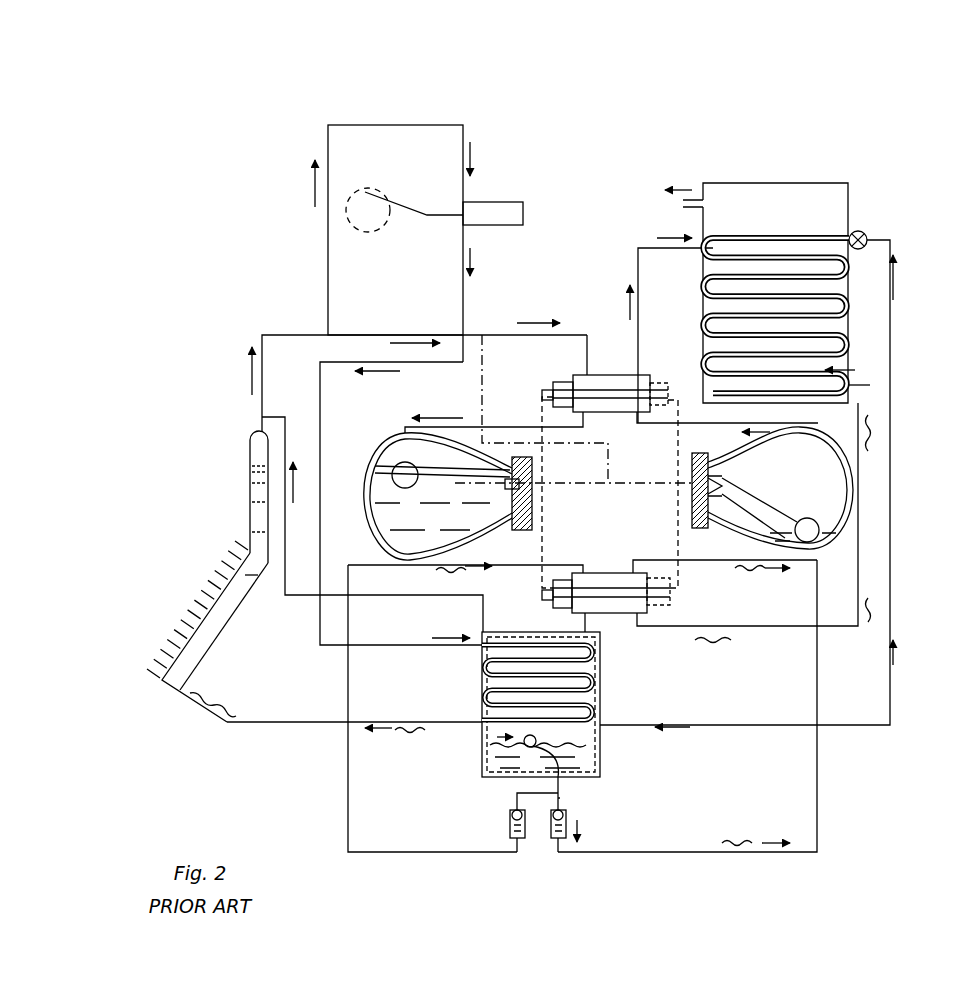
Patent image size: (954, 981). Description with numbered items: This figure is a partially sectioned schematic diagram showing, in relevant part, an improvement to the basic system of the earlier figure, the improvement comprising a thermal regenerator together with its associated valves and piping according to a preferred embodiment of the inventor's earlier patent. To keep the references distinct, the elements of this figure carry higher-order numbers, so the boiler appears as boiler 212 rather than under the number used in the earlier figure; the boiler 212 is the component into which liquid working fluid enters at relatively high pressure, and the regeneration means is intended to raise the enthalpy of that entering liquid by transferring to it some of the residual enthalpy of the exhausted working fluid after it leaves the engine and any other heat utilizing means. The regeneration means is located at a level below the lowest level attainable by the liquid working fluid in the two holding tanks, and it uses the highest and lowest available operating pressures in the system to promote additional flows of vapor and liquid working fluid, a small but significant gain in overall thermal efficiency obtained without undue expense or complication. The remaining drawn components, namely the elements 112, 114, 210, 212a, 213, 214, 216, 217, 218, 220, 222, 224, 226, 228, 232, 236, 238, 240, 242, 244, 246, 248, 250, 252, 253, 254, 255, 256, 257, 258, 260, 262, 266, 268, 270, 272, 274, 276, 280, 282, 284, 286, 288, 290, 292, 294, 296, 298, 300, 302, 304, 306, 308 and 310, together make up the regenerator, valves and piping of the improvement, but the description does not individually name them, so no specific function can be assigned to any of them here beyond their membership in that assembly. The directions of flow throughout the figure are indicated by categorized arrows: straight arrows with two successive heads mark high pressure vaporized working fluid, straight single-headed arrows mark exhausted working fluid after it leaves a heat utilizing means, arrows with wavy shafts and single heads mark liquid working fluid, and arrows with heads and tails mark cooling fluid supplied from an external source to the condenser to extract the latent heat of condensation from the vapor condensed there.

The first unit boundary 112 is at (483, 385).
The shaft 114 is at (622, 484).
The thermal system 210 is at (606, 177).
The boiler 212 is at (219, 630).
The riser section of evaporator tube 212a is at (250, 477).
The fins 213 is at (200, 592).
The nozzle 214 is at (512, 210).
The supply conduit 216 is at (280, 334).
The conduit 217 is at (284, 596).
The housing 218 is at (465, 130).
The deflector 220 is at (411, 210).
The turbine wheel 222 is at (385, 226).
The conduit 224 is at (465, 300).
The heat exchange coil 226 is at (492, 681).
The liquid 228 is at (490, 743).
The reservoir 232 is at (601, 703).
The conduit 236 is at (892, 239).
The valve 238 is at (862, 232).
The condenser 240 is at (782, 182).
The condenser coil 242 is at (713, 292).
The conduit 244 is at (862, 403).
The conduit 246 is at (728, 562).
The outlet 248 is at (536, 742).
The conduit 250 is at (560, 785).
The branch conduit 252 is at (526, 794).
The branch conduit 253 is at (560, 798).
The valve 254 is at (510, 834).
The valve actuator 255 is at (509, 817).
The conduit 256 is at (540, 566).
The valve 257 is at (578, 817).
The conduit 258 is at (348, 613).
The conduit 260 is at (490, 650).
The return conduit 262 is at (304, 723).
The conduit 266 is at (816, 578).
The float 268 is at (826, 517).
The flange 270 is at (730, 521).
The chamber wall 272 is at (790, 546).
The inlet tube 274 is at (797, 519).
The neck 276 is at (733, 477).
The float 280 is at (404, 463).
The flange 282 is at (507, 523).
The chamber wall 284 is at (382, 458).
The liquid 286 is at (400, 559).
The conduit 288 is at (586, 340).
The pump 290 is at (609, 374).
The pump housing 292 is at (622, 390).
The conduit 294 is at (502, 428).
The conduit 296 is at (692, 426).
The conduit 298 is at (637, 250).
The outlet 300 is at (872, 386).
The vent 302 is at (686, 204).
The pump housing 304 is at (608, 572).
The pump 306 is at (614, 614).
The pump unit boundary 308 is at (545, 535).
The boundary 310 is at (677, 470).